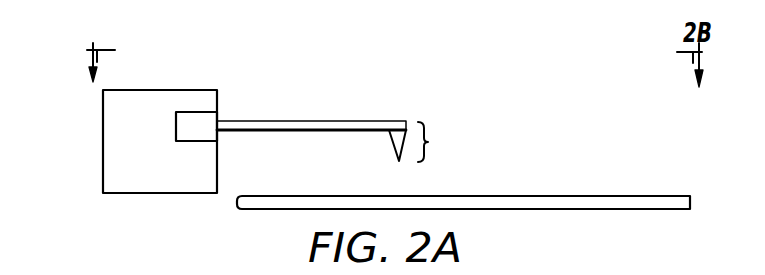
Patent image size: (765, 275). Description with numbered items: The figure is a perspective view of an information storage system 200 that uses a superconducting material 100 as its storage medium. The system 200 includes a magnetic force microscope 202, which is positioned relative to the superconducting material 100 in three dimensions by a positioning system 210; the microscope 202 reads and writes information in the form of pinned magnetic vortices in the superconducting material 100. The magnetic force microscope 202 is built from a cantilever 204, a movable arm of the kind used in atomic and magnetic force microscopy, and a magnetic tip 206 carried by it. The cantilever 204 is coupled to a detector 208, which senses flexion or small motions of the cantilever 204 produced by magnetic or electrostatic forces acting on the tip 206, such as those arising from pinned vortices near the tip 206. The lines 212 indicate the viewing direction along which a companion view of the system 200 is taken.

The superconducting material 100 is at (533, 196).
The information storage system 200 is at (462, 63).
The magnetic force microscope 202 is at (443, 142).
The cantilever 204 is at (337, 121).
The magnetic tip 206 is at (393, 138).
The detector 208 is at (176, 130).
The positioning system 210 is at (103, 142).
The lines 212 is at (90, 58).